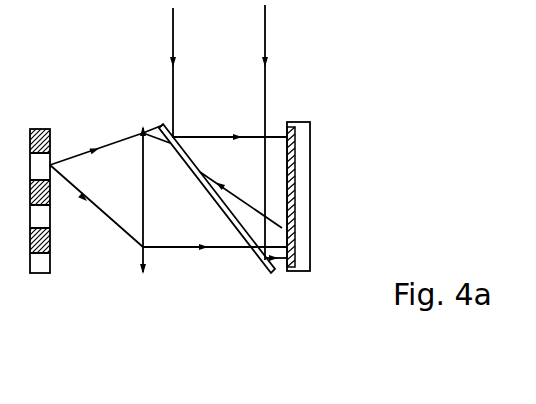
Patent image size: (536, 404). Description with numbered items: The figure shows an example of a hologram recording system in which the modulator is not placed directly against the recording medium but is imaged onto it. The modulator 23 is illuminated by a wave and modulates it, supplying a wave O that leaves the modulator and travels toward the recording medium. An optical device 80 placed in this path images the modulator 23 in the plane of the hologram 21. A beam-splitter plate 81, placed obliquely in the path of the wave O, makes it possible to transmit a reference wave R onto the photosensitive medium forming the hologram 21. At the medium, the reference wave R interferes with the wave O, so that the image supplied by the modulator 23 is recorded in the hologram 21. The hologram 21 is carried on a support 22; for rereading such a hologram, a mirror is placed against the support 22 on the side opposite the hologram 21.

The modulator 23 is at (36, 276).
The wave O is at (113, 207).
The optical device 80 is at (143, 272).
The beam-splitter plate 81 is at (262, 266).
The hologram 21 is at (290, 122).
The support 22 is at (300, 271).
The reference wave R is at (243, 27).